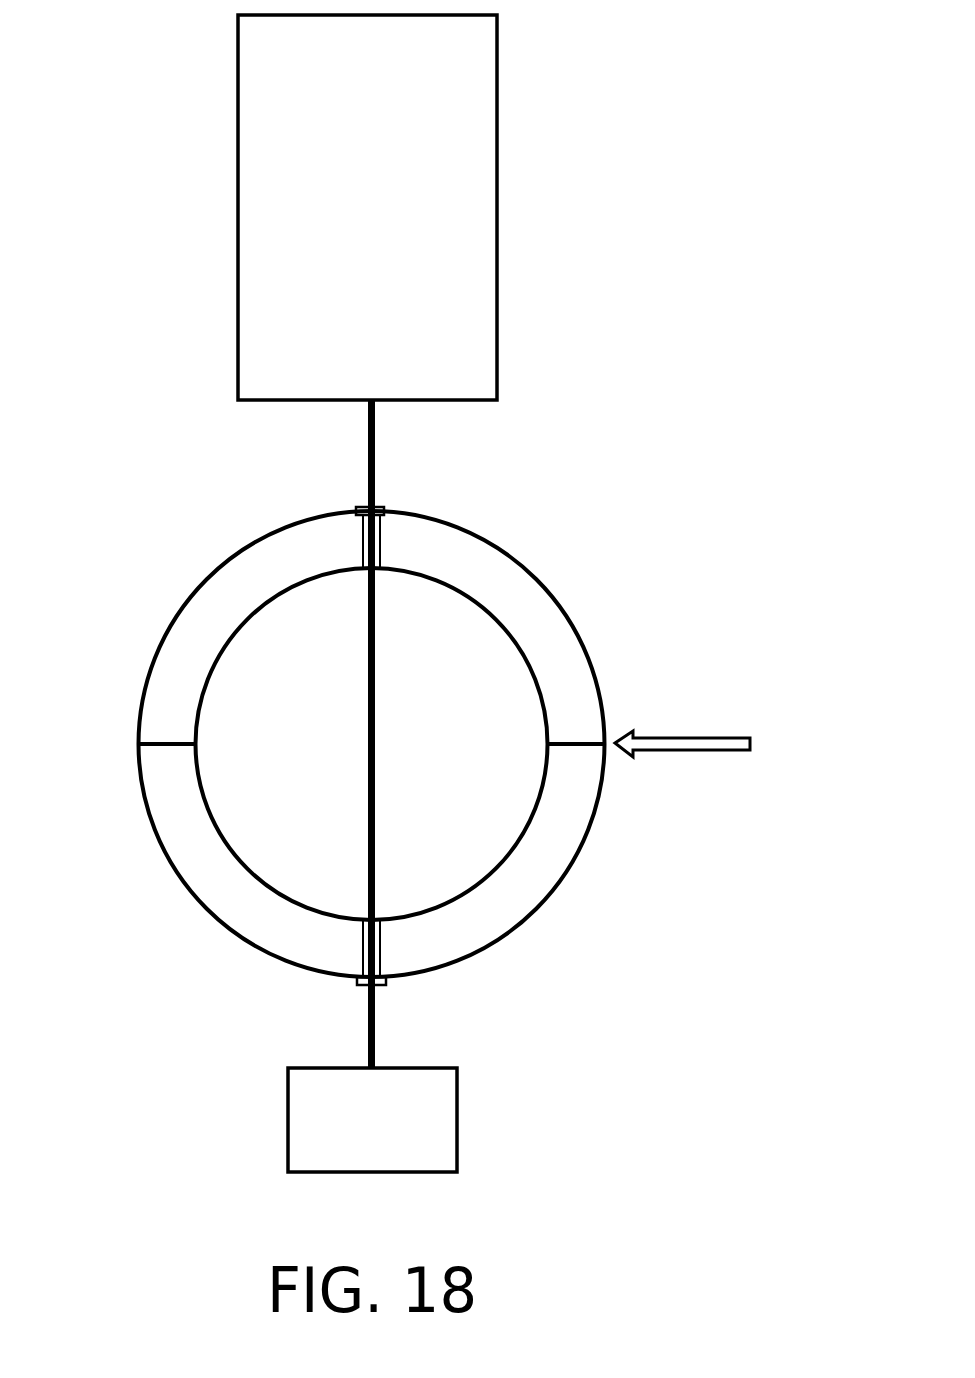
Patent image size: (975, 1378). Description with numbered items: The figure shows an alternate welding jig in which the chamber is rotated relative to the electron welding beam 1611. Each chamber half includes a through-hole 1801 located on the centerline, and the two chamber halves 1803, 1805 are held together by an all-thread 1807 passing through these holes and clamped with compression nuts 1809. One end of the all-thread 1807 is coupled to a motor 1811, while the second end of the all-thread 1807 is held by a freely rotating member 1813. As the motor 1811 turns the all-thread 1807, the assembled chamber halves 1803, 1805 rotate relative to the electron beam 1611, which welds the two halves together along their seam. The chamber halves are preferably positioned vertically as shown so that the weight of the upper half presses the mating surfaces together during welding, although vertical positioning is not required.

The motor 1811 is at (263, 55).
The all-thread 1807 is at (375, 438).
The through-hole 1801 is at (360, 540).
The chamber half 1803 is at (193, 643).
The chamber half 1805 is at (192, 860).
The compression nuts 1809 is at (384, 511).
The freely rotating member 1813 is at (326, 1138).
The electron beam 1611 is at (700, 750).